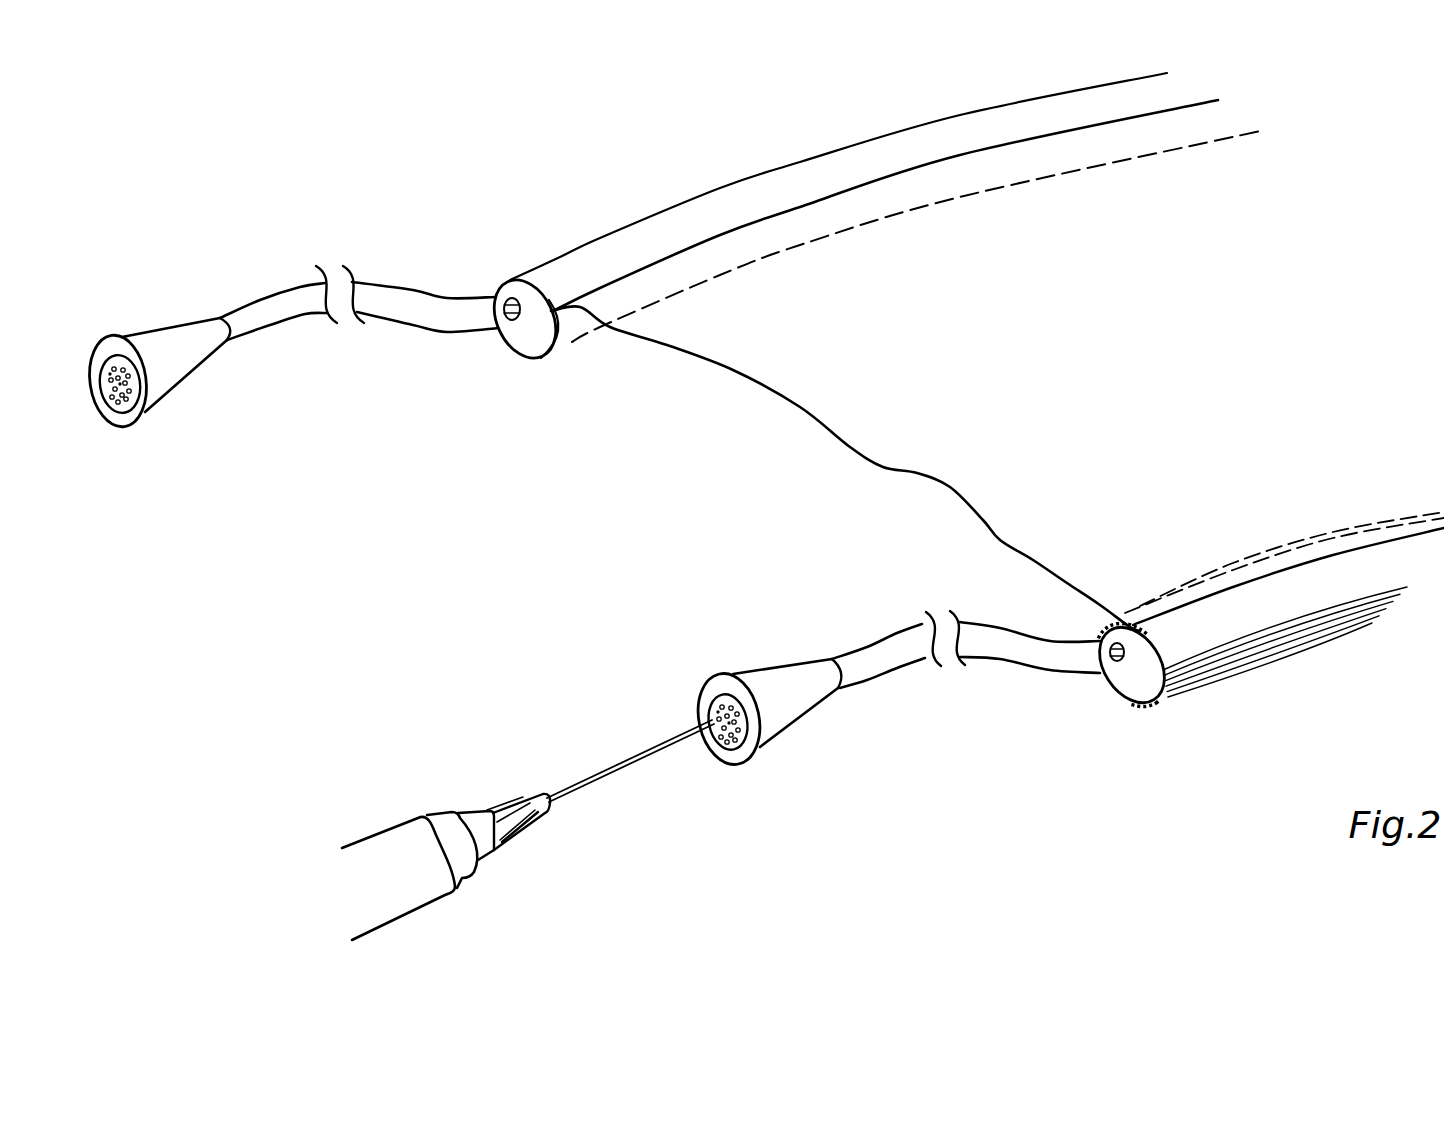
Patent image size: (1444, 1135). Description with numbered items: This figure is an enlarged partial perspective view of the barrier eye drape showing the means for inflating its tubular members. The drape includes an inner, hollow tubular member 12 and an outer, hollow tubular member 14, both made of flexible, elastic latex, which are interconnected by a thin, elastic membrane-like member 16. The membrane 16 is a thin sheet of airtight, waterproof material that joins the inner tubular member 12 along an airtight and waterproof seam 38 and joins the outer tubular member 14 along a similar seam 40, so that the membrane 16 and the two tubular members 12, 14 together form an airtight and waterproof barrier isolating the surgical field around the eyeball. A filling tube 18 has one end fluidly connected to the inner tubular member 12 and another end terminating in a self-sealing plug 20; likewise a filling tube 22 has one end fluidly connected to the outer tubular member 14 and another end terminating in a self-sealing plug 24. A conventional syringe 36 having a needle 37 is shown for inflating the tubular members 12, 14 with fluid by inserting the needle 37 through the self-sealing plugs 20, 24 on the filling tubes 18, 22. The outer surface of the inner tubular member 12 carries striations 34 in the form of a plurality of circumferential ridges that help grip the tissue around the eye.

The inner tubular member 12 is at (1122, 689).
The outer tubular member 14 is at (538, 361).
The membrane-like member 16 is at (1026, 376).
The filling tube 18 is at (985, 654).
The self-sealing plug 20 is at (725, 688).
The filling tube 22 is at (268, 305).
The self-sealing plug 24 is at (152, 413).
The striations 34 is at (1157, 703).
The syringe 36 is at (389, 818).
The needle 37 is at (637, 772).
The seam 38 is at (1105, 623).
The seam 40 is at (527, 356).